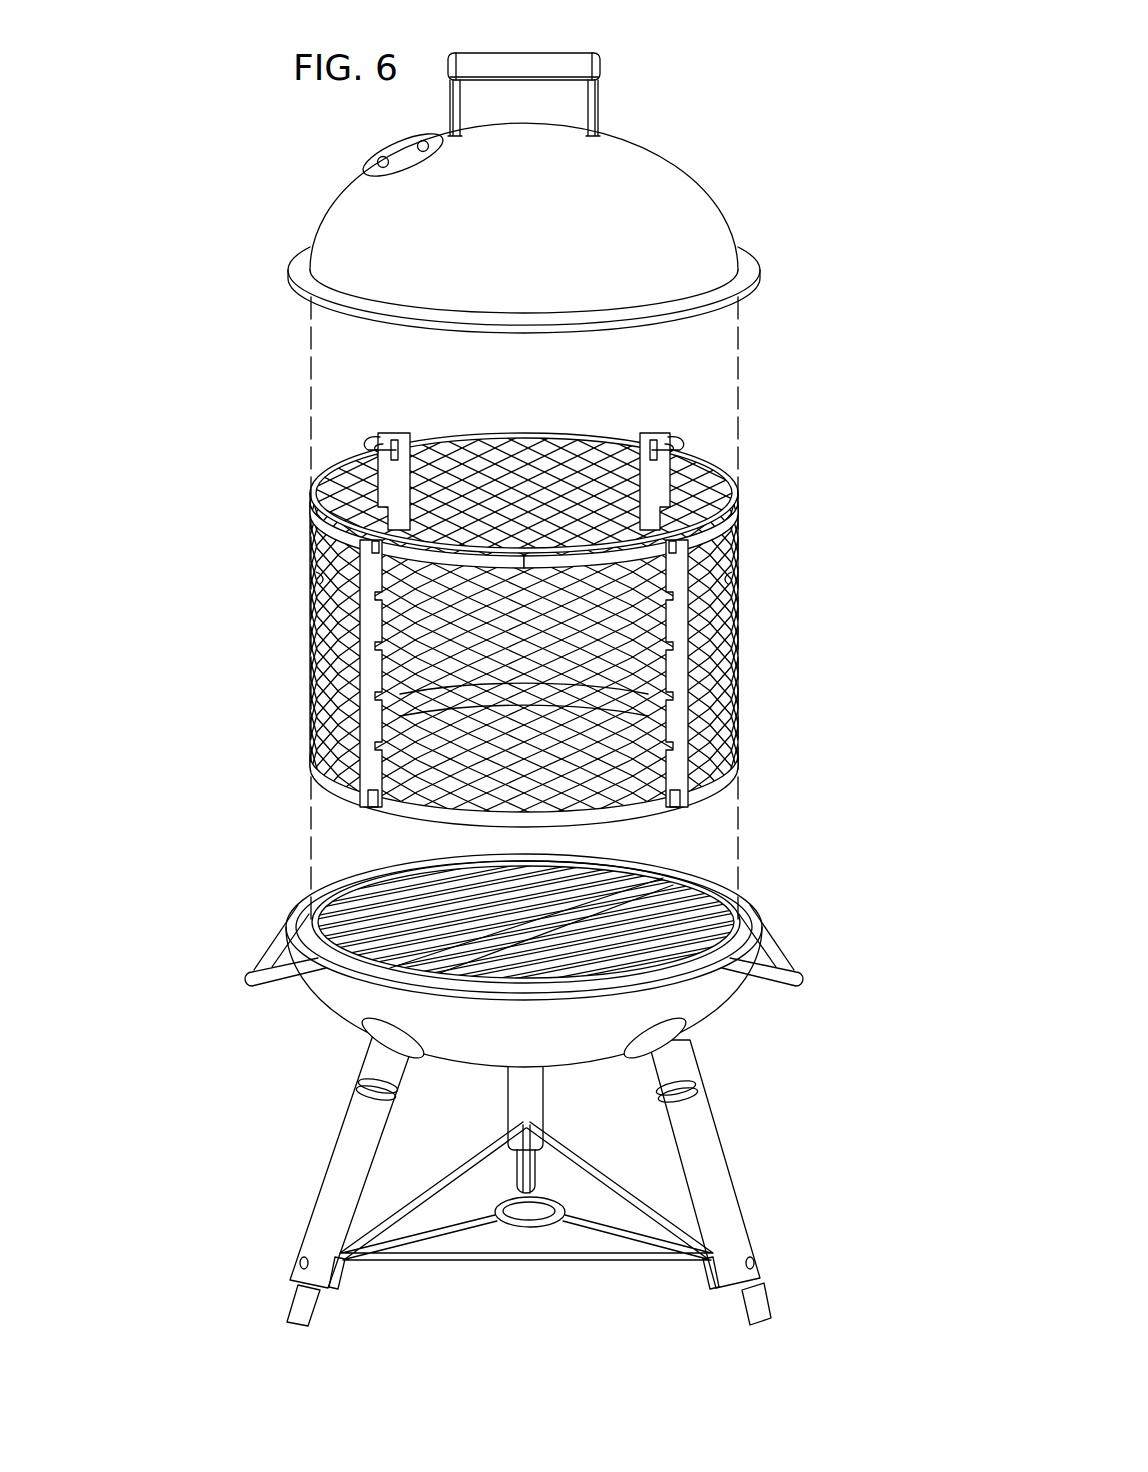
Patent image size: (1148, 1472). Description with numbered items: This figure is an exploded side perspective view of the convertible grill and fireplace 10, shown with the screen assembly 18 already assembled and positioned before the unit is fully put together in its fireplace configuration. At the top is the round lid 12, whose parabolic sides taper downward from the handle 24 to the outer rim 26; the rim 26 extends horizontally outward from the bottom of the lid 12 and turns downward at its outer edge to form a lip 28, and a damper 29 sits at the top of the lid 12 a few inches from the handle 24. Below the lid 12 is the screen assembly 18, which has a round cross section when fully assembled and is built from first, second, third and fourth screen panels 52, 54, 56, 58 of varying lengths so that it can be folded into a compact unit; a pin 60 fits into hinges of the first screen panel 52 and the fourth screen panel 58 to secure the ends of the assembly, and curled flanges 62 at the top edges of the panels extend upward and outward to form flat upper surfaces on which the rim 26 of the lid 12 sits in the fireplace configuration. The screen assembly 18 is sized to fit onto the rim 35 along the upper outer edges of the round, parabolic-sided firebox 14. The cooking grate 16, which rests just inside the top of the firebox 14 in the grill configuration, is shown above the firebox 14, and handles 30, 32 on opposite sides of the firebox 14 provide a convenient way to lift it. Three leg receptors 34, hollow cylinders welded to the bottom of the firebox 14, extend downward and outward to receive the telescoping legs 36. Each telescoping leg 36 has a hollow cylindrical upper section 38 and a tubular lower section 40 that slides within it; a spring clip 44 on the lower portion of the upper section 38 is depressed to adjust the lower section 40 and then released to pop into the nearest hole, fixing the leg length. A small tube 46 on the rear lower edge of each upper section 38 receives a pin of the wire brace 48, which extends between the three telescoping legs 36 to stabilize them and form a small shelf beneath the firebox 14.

The convertible grill and fireplace 10 is at (775, 375).
The lid 12 is at (660, 165).
The firebox 14 is at (518, 926).
The cooking grate 16 is at (634, 886).
The screen assembly 18 is at (505, 607).
The handle 24 is at (530, 62).
The outer rim 26 is at (748, 252).
The lip 28 is at (765, 282).
The damper 29 is at (386, 146).
The handle 30 is at (252, 988).
The handle 32 is at (796, 986).
The leg receptor 34 is at (370, 1073).
The rim 35 is at (302, 916).
The telescoping leg 36 is at (520, 1175).
The upper section 38 is at (337, 1172).
The lower section 40 is at (516, 1174).
The spring clip 44 is at (300, 1262).
The small tube 46 is at (336, 1279).
The wire brace 48 is at (500, 1256).
The first screen panel 52 is at (322, 524).
The second screen panel 54 is at (453, 813).
The third screen panel 56 is at (728, 524).
The fourth screen panel 58 is at (515, 438).
The pin 60 is at (410, 446).
The curled flange 62 is at (376, 438).